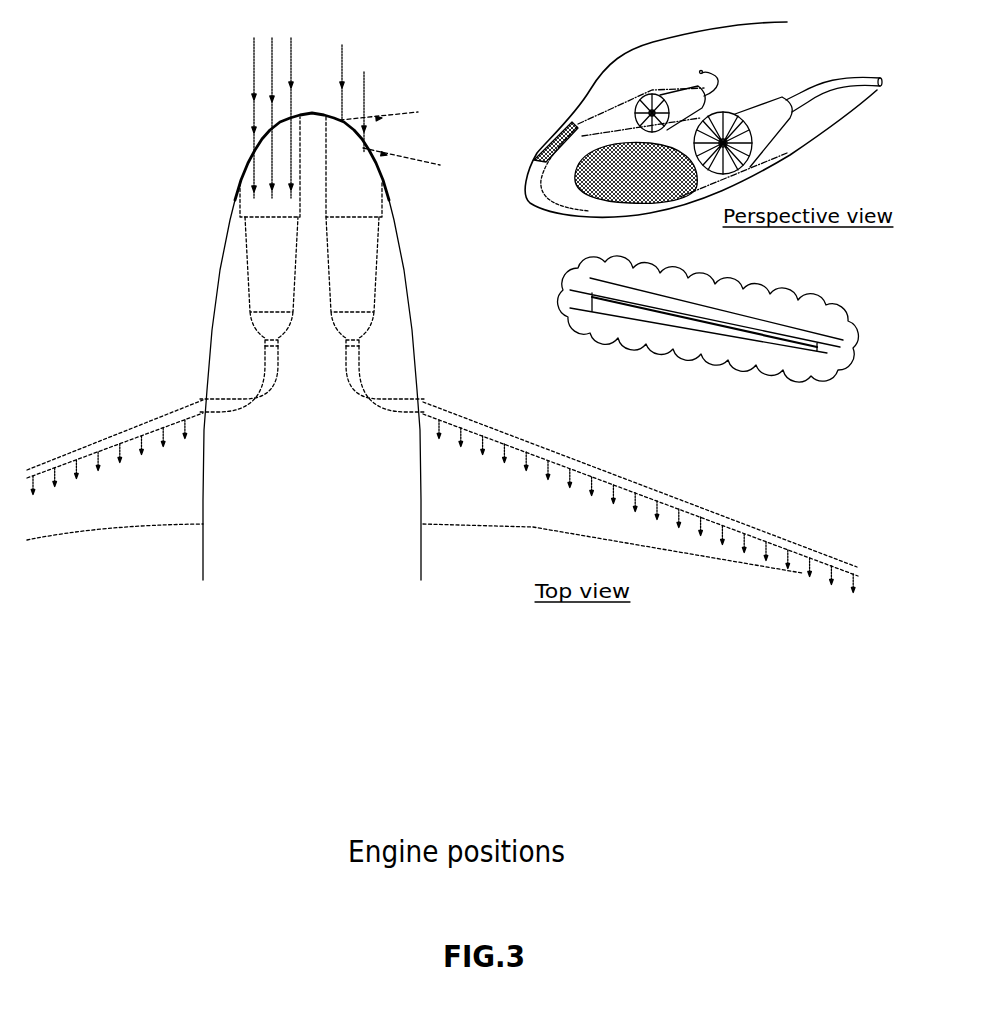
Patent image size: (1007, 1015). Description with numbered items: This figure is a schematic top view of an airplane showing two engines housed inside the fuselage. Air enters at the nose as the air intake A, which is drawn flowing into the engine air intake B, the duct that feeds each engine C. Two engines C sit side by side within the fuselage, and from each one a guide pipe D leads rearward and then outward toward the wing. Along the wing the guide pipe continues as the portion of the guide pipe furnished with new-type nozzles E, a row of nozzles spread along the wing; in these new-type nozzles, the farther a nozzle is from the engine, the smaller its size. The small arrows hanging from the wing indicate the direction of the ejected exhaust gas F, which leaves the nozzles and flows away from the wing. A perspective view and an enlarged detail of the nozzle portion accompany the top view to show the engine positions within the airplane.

The air intake A is at (253, 100).
The engine air intake B is at (363, 173).
The engine C is at (363, 265).
The guide pipe D is at (363, 390).
The portion of the guide pipe furnished with new-type nozzles E is at (498, 437).
The direction of the ejected exhaust gas F is at (723, 525).